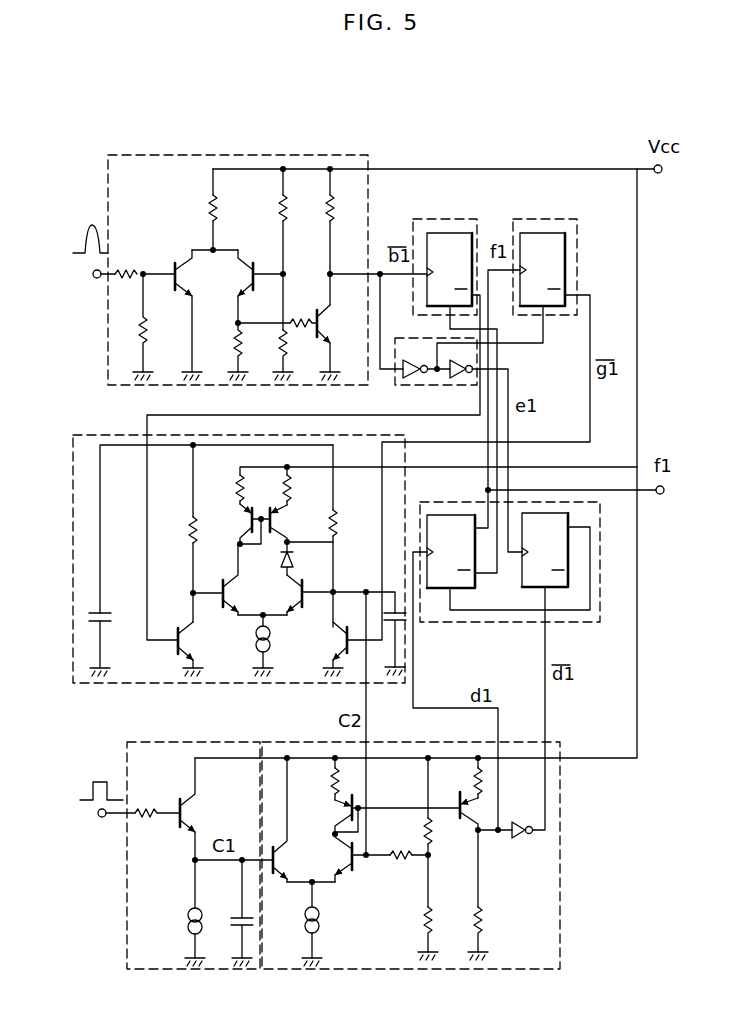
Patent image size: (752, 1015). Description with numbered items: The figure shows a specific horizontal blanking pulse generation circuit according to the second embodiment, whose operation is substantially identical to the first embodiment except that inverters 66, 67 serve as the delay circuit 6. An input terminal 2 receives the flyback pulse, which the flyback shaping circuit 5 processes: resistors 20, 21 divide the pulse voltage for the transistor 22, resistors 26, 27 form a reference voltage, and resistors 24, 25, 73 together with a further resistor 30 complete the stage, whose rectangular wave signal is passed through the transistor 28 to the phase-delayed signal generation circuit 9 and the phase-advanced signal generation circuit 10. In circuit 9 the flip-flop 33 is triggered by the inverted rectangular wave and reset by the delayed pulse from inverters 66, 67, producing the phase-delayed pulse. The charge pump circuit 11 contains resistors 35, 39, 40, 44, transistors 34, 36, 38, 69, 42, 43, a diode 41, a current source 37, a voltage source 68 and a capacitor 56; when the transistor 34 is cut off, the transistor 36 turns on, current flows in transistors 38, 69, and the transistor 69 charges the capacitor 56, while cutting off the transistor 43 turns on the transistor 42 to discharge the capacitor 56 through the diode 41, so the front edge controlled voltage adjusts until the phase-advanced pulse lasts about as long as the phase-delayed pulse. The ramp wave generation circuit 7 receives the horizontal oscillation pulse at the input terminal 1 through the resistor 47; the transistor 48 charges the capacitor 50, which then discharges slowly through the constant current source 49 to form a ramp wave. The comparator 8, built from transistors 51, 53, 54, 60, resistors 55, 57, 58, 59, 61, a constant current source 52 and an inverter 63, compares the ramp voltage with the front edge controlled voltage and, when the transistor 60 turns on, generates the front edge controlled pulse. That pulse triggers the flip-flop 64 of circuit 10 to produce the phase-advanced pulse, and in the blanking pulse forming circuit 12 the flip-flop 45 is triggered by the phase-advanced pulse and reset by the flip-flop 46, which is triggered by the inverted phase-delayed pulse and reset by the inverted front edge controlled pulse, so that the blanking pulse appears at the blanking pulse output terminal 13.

The input terminal 1 is at (102, 817).
The input terminal 2 is at (95, 278).
The flyback shaping circuit 5 is at (200, 155).
The delay circuit 6 is at (403, 322).
The ramp wave generation circuit 7 is at (127, 752).
The comparator 8 is at (380, 742).
The phase-delayed signal generation circuit 9 is at (470, 219).
The phase-advanced signal generation circuit 10 is at (577, 219).
The charge pump circuit 11 is at (73, 442).
The blanking pulse forming circuit 12 is at (600, 538).
The blanking pulse output terminal 13 is at (660, 494).
The resistor 20 is at (124, 278).
The resistor 21 is at (140, 338).
The transistor 22 is at (185, 282).
The resistor 24 is at (210, 208).
The resistor 25 is at (232, 352).
The resistor 26 is at (290, 212).
The resistor 27 is at (290, 352).
The transistor 28 is at (250, 262).
The resistor 30 is at (340, 206).
The flip-flop 33 is at (443, 233).
The transistor 34 is at (185, 658).
The resistor 35 is at (188, 540).
The transistor 36 is at (234, 612).
The current source 37 is at (257, 652).
The transistor 38 is at (248, 520).
The resistor 39 is at (238, 488).
The resistor 40 is at (292, 484).
The diode 41 is at (282, 560).
The transistor 42 is at (291, 612).
The transistor 43 is at (338, 655).
The resistor 44 is at (336, 528).
The flip-flop 45 is at (437, 515).
The flip-flop 46 is at (522, 583).
The resistor 47 is at (148, 820).
The transistor 48 is at (192, 814).
The constant current source 49 is at (188, 930).
The capacitor 50 is at (240, 935).
The transistor 51 is at (286, 880).
The constant current source 52 is at (306, 932).
The transistor 53 is at (340, 875).
The transistor 54 is at (348, 812).
The resistor 55 is at (332, 780).
The capacitor 56 is at (402, 630).
The resistor 57 is at (400, 866).
The resistor 58 is at (424, 925).
The resistor 59 is at (424, 830).
The transistor 60 is at (472, 826).
The resistor 61 is at (474, 780).
The inverter 63 is at (522, 838).
The flip-flop 64 is at (545, 233).
The inverter 66 is at (412, 380).
The inverter 67 is at (456, 380).
The voltage source 68 is at (105, 612).
The transistor 69 is at (275, 520).
The resistor 73 is at (302, 320).